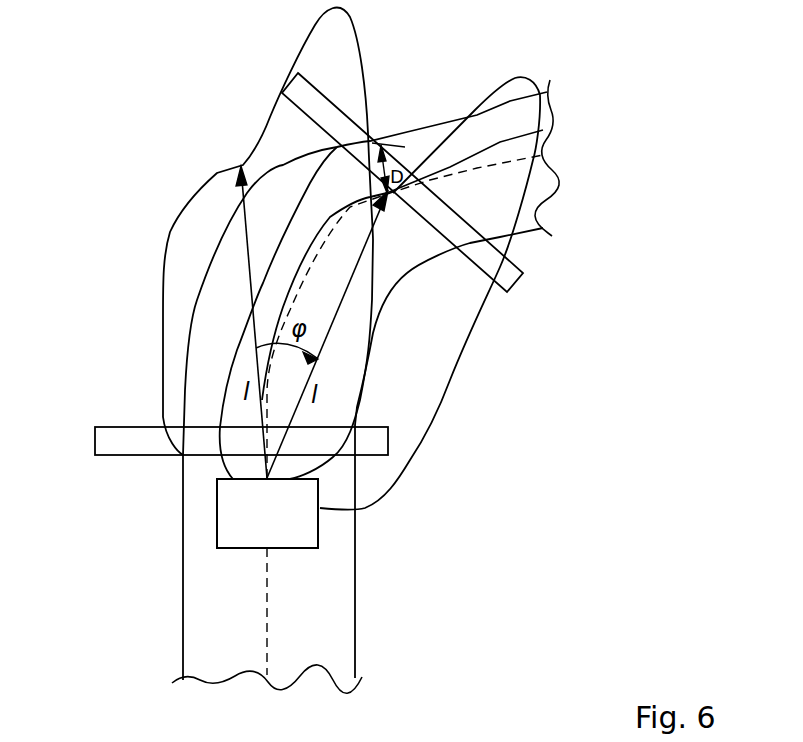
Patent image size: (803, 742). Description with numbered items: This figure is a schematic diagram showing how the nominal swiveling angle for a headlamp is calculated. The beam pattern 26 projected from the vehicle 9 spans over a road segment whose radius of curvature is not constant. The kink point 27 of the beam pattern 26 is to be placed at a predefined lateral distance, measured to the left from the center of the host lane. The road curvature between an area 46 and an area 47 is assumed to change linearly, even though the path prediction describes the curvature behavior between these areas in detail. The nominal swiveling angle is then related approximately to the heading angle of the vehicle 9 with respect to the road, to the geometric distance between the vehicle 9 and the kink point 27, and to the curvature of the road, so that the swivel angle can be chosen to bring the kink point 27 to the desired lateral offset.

The vehicle 9 is at (241, 517).
The beam pattern 26 is at (458, 377).
The kink point 27 is at (545, 132).
The area 46 is at (117, 427).
The area 47 is at (517, 266).